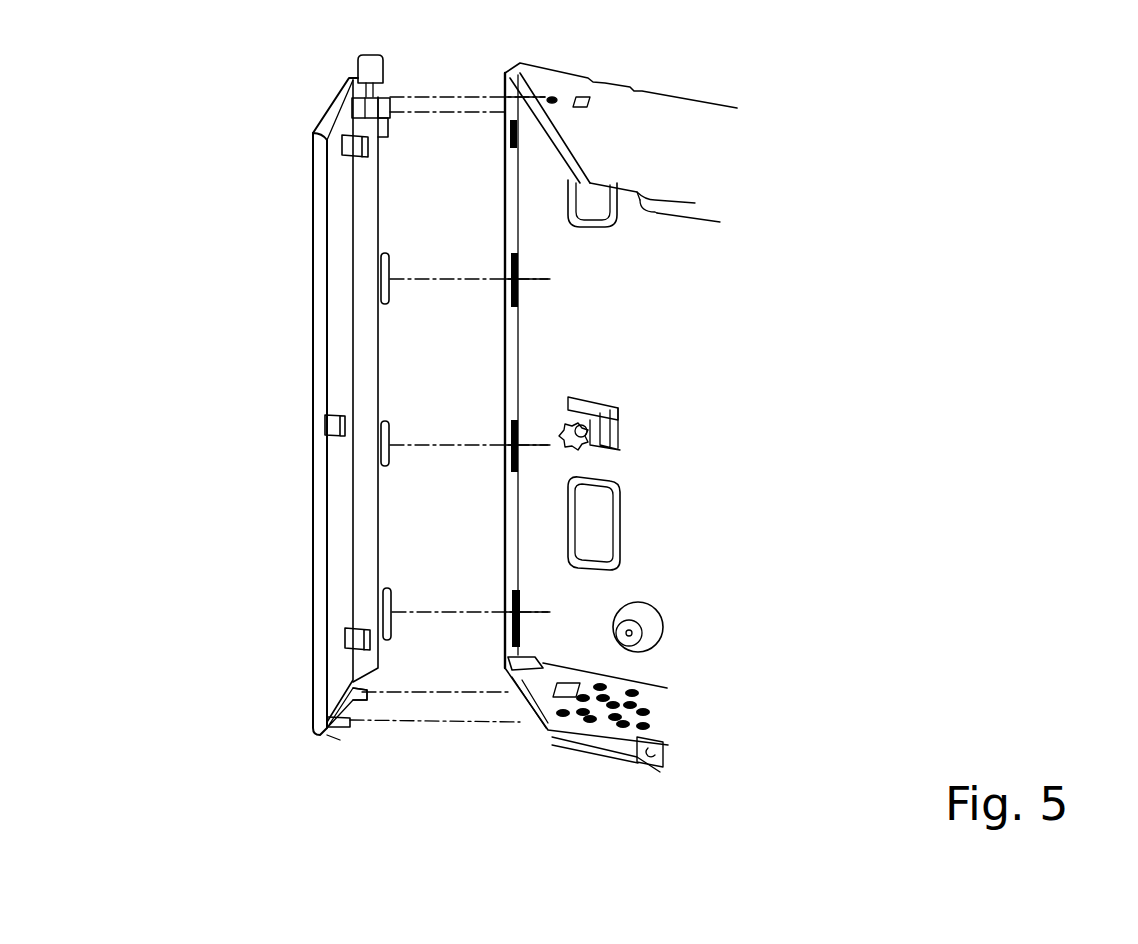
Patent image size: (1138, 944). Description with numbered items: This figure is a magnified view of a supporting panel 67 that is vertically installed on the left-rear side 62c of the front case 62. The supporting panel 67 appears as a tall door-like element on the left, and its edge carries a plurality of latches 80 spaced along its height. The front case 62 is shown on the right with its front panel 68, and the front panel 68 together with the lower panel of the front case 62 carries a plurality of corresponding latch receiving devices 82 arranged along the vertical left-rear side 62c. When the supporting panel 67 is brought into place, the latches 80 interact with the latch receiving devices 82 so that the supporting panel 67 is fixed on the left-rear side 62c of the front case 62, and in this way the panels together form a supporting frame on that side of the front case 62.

The supporting panel 67 is at (288, 62).
The front case 62 is at (704, 60).
The left-rear side 62c is at (510, 362).
The front panel 68 is at (667, 480).
The latches 80 is at (390, 128).
The latch receiving devices 82 is at (508, 125).